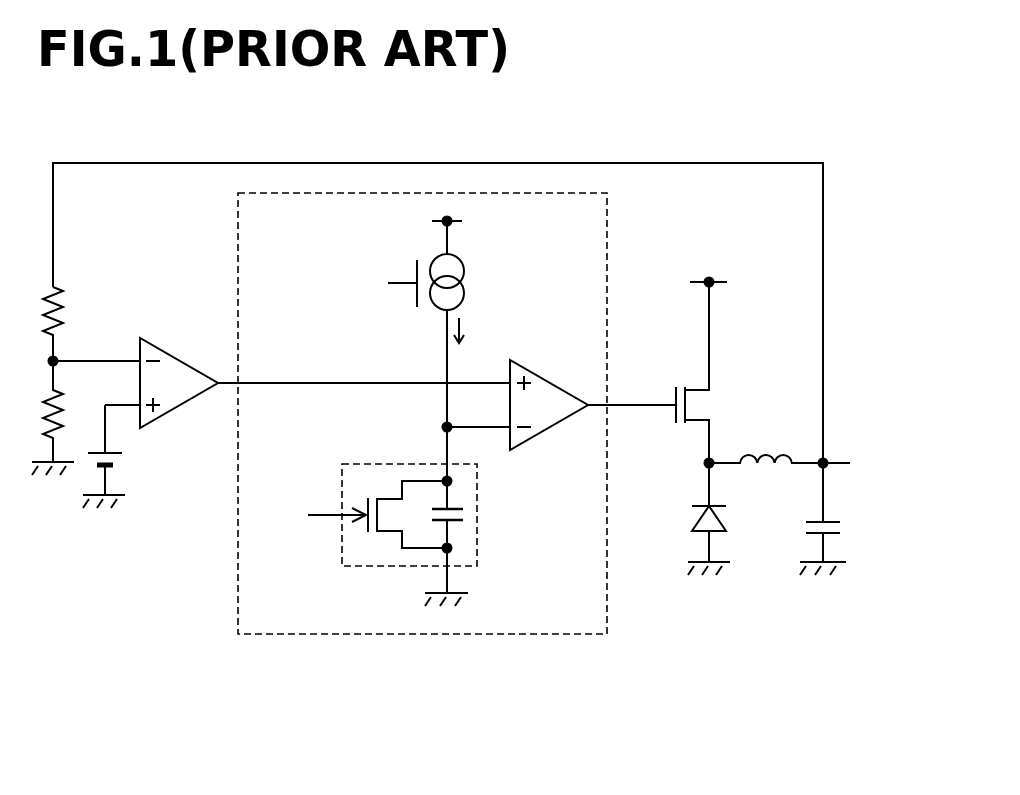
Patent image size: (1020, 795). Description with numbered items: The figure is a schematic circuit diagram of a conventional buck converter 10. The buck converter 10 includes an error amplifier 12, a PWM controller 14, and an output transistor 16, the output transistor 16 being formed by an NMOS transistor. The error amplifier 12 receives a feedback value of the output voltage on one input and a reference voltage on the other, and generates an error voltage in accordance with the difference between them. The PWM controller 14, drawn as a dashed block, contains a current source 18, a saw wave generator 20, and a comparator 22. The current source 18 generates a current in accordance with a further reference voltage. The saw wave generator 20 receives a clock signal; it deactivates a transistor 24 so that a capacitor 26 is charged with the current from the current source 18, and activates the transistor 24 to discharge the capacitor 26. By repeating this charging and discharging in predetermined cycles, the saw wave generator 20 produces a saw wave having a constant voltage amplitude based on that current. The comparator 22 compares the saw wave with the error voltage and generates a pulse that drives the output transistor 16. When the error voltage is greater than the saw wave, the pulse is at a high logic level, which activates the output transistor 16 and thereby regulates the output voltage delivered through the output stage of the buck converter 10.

The buck converter 10 is at (181, 564).
The error amplifier 12 is at (172, 356).
The PWM controller 14 is at (608, 210).
The output transistor 16 is at (699, 388).
The current source 18 is at (465, 262).
The saw wave generator 20 is at (334, 555).
The comparator 22 is at (542, 372).
The transistor 24 is at (395, 493).
The capacitor 26 is at (455, 526).